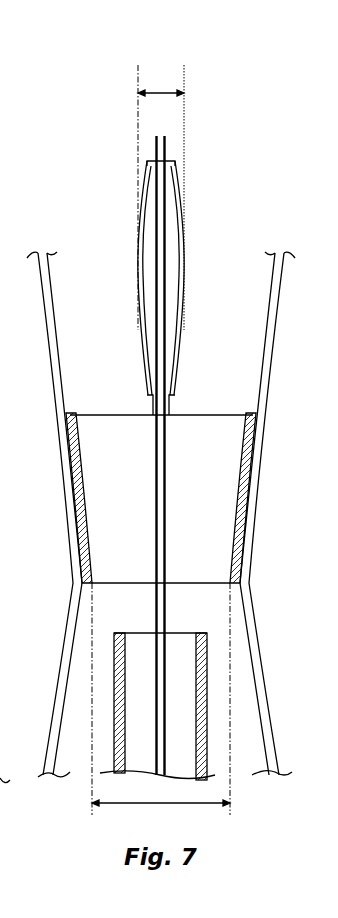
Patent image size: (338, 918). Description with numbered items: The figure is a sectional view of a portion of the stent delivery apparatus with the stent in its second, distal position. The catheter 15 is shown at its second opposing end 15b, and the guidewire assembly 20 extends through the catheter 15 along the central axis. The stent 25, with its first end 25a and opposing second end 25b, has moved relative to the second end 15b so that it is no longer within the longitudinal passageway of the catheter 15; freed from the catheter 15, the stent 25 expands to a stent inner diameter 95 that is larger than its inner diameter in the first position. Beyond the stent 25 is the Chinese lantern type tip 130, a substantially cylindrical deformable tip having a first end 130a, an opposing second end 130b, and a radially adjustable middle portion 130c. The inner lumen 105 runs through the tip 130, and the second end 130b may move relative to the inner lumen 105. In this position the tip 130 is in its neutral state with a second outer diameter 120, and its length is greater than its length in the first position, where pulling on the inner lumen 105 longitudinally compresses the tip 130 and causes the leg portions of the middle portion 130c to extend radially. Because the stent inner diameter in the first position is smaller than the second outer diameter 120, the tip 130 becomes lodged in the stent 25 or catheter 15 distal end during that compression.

The guidewire assembly 20 is at (90, 250).
The second outer diameter 120 is at (160, 92).
The Chinese lantern type tip 130 is at (174, 174).
The first end 130a is at (152, 318).
The opposing second end 130b is at (173, 397).
The radially adjustable middle portion 130c is at (185, 297).
The inner lumen 105 is at (167, 463).
The stent 25 is at (233, 529).
The first end 25a is at (245, 590).
The second end 25b is at (70, 415).
The catheter 15 is at (141, 697).
The second opposing end 15b is at (114, 632).
The stent inner diameter 95 is at (192, 803).